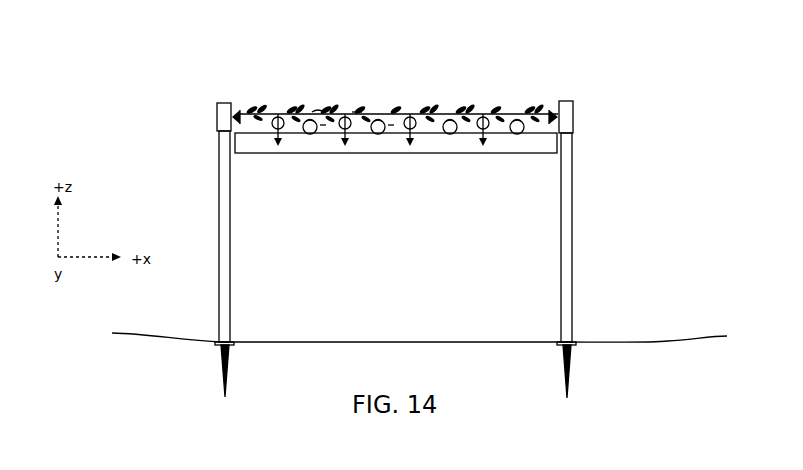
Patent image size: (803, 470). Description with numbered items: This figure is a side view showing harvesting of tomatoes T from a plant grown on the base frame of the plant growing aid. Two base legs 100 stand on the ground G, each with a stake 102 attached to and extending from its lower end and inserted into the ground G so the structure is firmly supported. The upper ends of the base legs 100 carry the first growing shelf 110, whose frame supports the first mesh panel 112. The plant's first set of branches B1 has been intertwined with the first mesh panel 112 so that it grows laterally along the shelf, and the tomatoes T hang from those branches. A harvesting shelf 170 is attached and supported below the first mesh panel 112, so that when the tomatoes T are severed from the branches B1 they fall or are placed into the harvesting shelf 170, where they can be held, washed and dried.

The base leg 100 is at (223, 292).
The stake 102 is at (231, 376).
The first growing shelf 110 is at (596, 115).
The first mesh panel 112 is at (448, 112).
The harvesting shelf 170 is at (425, 160).
The first set of branches B1 is at (317, 110).
The tomatoes T is at (362, 110).
The ground G is at (668, 342).